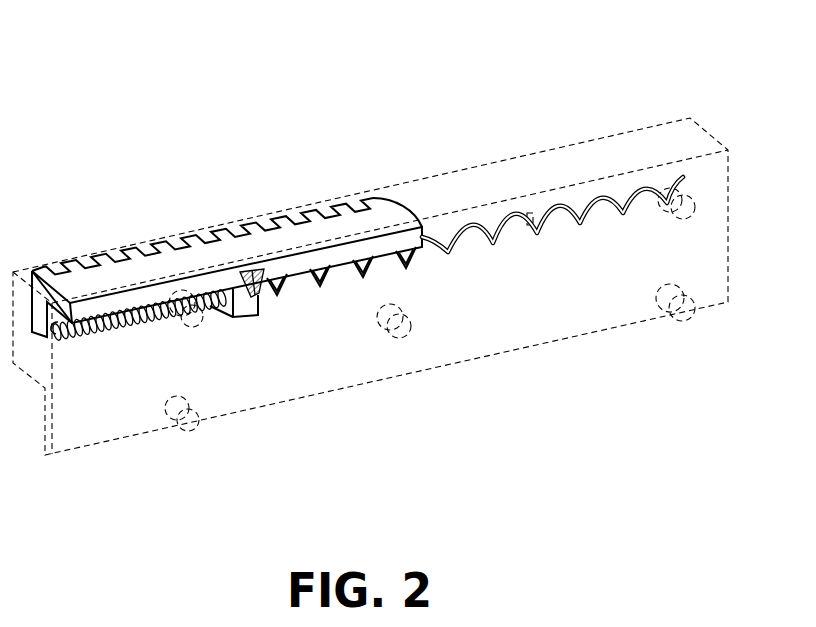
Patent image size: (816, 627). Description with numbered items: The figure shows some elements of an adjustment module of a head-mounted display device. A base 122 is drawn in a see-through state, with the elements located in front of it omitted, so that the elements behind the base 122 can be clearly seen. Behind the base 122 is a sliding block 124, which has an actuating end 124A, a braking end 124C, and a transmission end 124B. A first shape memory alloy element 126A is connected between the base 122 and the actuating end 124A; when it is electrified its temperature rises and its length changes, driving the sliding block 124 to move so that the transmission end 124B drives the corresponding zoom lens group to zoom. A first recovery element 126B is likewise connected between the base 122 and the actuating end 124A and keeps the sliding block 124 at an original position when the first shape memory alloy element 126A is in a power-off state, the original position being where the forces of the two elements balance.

The base 122 is at (712, 133).
The sliding block 124 is at (410, 212).
The actuating end 124A is at (248, 303).
The transmission end 124B is at (165, 237).
The braking end 124C is at (257, 273).
The first SMA element 126A is at (140, 323).
The first recovery element 126B is at (598, 197).